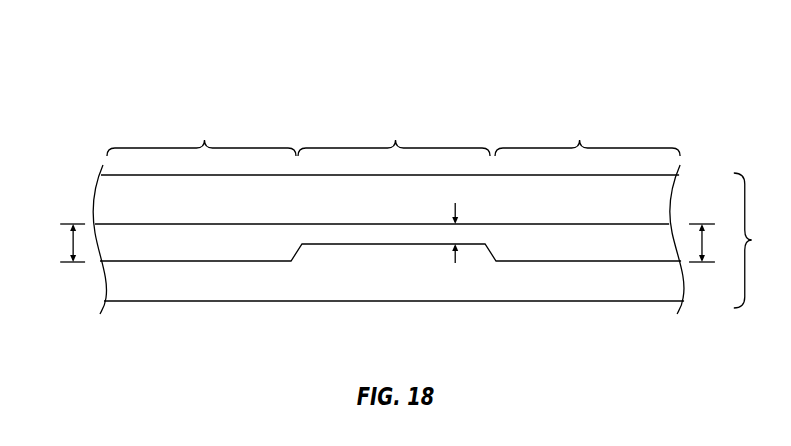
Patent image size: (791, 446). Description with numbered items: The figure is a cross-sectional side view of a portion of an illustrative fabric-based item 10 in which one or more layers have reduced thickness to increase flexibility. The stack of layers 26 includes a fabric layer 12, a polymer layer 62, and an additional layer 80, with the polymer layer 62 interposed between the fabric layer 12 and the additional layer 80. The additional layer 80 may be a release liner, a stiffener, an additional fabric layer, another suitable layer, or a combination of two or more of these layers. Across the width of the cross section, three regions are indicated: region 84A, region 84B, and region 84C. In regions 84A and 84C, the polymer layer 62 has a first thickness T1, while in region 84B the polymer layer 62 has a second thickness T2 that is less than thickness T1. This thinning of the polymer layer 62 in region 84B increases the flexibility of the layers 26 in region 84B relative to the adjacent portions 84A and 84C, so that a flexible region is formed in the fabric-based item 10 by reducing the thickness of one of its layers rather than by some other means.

The fabric-based item 10 is at (646, 88).
The fabric layer 12 is at (103, 197).
The layers 26 is at (755, 240).
The polymer layer 62 is at (138, 256).
The additional layer 80 is at (657, 287).
The region 84A is at (201, 138).
The region 84B is at (394, 138).
The region 84C is at (587, 138).
The first thickness T1 is at (388, 243).
The second thickness T2 is at (455, 233).